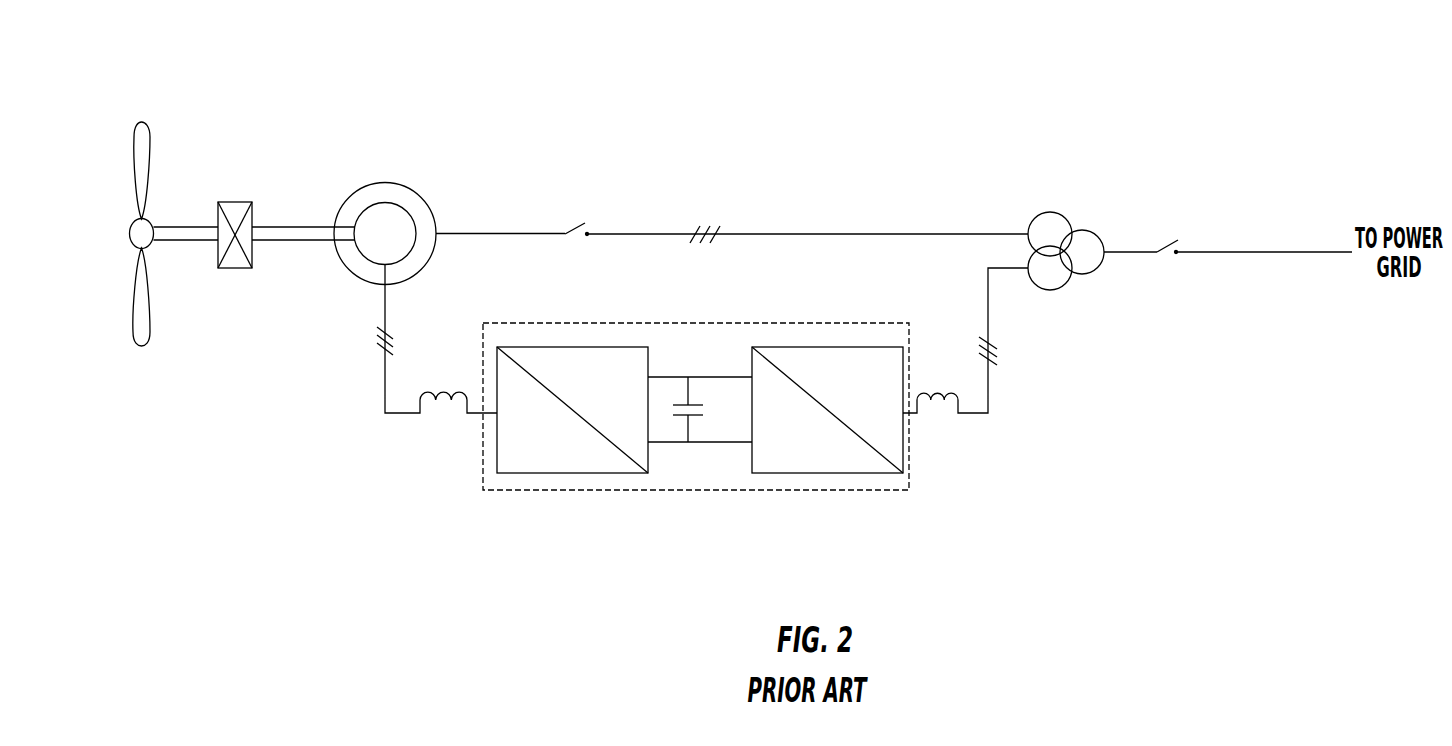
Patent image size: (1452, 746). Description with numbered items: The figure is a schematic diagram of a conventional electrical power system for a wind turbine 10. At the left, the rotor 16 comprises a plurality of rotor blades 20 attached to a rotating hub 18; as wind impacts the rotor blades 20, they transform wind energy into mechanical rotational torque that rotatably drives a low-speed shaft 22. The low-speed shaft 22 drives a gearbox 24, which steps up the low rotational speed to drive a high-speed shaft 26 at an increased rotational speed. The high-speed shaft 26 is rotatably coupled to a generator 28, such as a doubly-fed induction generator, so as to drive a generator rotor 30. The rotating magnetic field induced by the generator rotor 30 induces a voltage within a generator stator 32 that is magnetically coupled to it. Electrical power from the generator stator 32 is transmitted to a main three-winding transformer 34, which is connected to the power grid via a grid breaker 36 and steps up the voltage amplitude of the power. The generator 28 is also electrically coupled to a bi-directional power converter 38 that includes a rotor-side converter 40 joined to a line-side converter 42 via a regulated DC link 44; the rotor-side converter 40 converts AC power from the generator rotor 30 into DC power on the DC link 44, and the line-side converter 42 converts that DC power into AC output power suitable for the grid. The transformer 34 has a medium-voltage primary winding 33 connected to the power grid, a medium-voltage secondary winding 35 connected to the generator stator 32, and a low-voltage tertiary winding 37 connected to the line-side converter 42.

The wind turbine 10 is at (147, 92).
The rotor 16 is at (114, 244).
The rotating hub 18 is at (131, 242).
The rotor blades 20 is at (143, 160).
The low-speed shaft 22 is at (170, 241).
The gearbox 24 is at (233, 202).
The high-speed shaft 26 is at (267, 241).
The generator 28 is at (384, 176).
The generator rotor 30 is at (408, 210).
The generator stator 32 is at (368, 285).
The primary winding 33 is at (1086, 274).
The three-winding transformer 34 is at (1078, 183).
The secondary winding 35 is at (1030, 222).
The grid breaker 36 is at (1190, 234).
The tertiary winding 37 is at (1061, 290).
The bi-directional power converter 38 is at (721, 318).
The rotor-side converter 40 is at (558, 474).
The line-side converter 42 is at (842, 475).
The DC link 44 is at (707, 432).